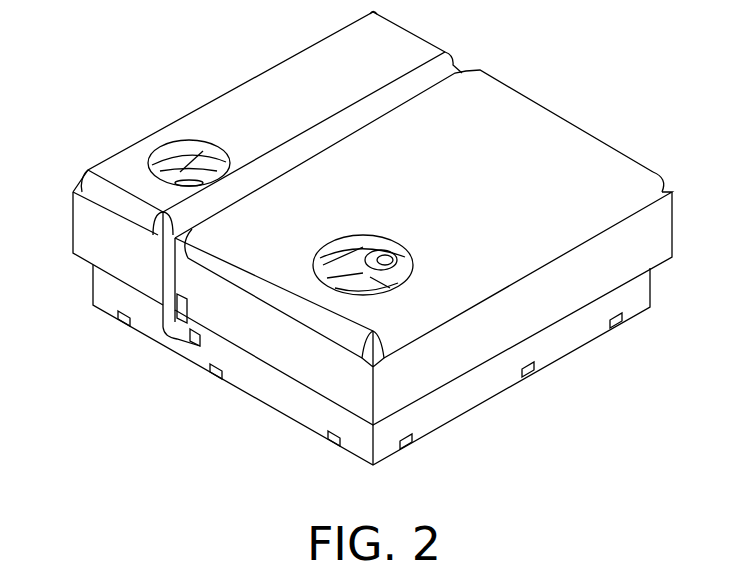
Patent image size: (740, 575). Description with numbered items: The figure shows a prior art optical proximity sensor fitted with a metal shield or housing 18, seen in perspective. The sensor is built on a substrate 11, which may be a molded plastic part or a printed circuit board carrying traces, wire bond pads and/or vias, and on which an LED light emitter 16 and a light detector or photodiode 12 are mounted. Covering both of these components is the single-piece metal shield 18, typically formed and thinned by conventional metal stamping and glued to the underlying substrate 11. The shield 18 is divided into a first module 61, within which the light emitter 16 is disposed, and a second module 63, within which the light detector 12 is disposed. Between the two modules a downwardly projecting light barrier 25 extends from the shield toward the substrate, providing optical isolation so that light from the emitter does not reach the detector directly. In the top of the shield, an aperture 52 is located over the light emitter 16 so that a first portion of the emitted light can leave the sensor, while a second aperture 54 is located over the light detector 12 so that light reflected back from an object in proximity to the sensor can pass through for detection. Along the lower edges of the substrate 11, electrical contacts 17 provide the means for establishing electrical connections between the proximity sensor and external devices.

The substrate 11 is at (378, 440).
The light detector 12 is at (413, 260).
The light emitter 16 is at (180, 172).
The electrical contacts 17 is at (333, 442).
The metal shield 18 is at (608, 165).
The light barrier 25 is at (162, 300).
The aperture 52 is at (208, 166).
The aperture 54 is at (372, 242).
The first module 61 is at (122, 165).
The second module 63 is at (636, 168).